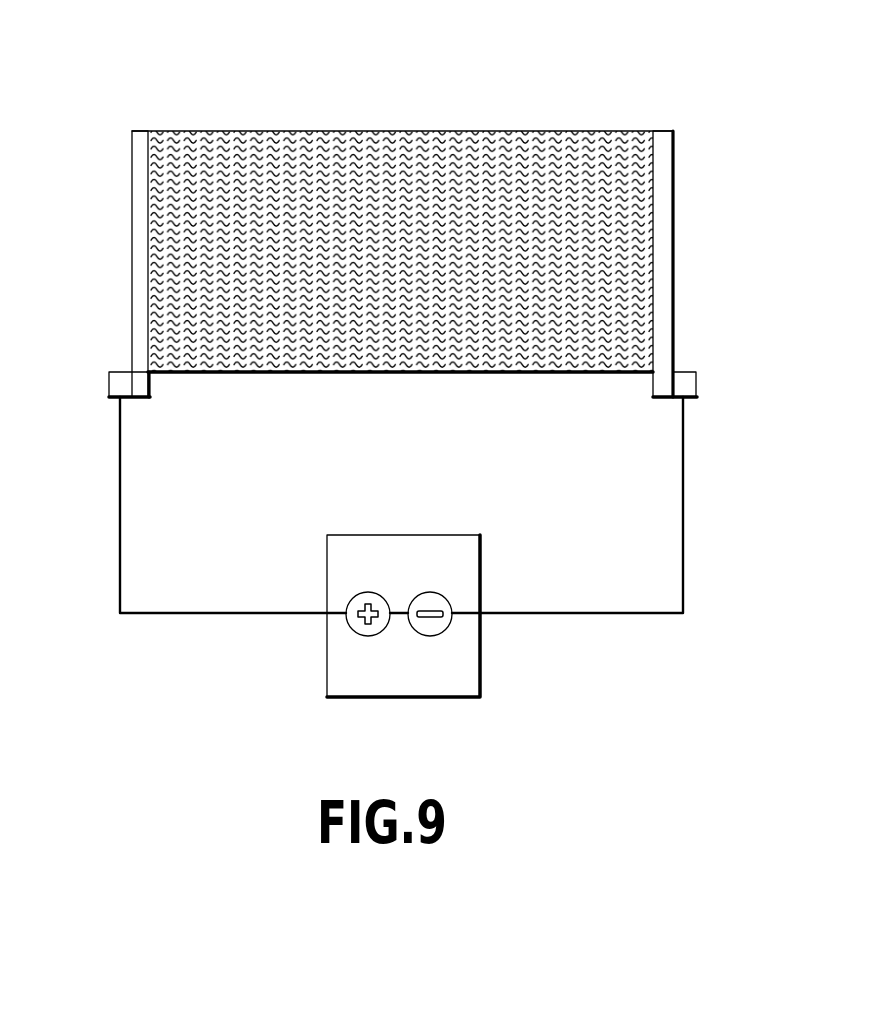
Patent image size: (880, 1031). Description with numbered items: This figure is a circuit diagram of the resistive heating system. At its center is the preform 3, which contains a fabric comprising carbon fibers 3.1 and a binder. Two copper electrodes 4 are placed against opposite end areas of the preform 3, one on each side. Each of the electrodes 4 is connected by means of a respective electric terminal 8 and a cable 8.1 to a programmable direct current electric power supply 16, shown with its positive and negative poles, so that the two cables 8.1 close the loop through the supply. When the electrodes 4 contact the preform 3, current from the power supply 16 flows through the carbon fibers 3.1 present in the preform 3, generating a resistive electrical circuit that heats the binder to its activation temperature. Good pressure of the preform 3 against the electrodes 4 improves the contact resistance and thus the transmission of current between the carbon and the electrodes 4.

The preform 3 is at (317, 130).
The carbon fibers 3.1 is at (483, 180).
The copper electrodes 4 is at (138, 222).
The electric terminals 8 is at (123, 382).
The cables 8.1 is at (120, 467).
The programmable direct current electric power supply 16 is at (481, 656).